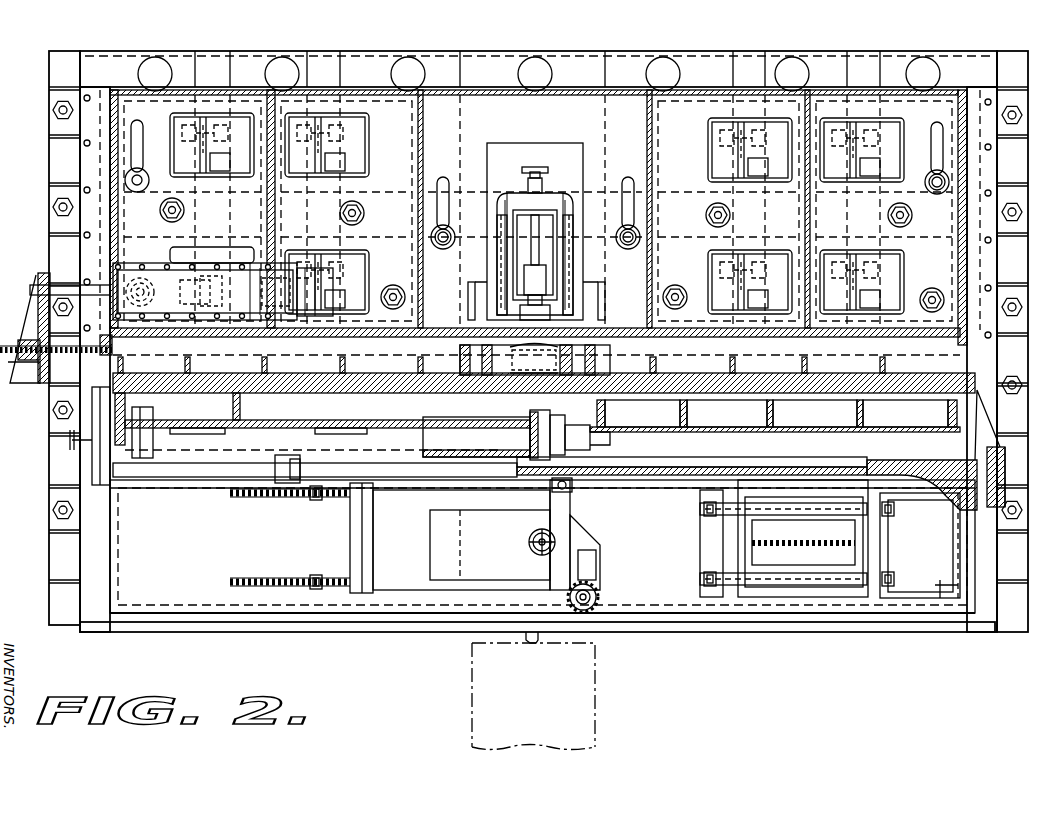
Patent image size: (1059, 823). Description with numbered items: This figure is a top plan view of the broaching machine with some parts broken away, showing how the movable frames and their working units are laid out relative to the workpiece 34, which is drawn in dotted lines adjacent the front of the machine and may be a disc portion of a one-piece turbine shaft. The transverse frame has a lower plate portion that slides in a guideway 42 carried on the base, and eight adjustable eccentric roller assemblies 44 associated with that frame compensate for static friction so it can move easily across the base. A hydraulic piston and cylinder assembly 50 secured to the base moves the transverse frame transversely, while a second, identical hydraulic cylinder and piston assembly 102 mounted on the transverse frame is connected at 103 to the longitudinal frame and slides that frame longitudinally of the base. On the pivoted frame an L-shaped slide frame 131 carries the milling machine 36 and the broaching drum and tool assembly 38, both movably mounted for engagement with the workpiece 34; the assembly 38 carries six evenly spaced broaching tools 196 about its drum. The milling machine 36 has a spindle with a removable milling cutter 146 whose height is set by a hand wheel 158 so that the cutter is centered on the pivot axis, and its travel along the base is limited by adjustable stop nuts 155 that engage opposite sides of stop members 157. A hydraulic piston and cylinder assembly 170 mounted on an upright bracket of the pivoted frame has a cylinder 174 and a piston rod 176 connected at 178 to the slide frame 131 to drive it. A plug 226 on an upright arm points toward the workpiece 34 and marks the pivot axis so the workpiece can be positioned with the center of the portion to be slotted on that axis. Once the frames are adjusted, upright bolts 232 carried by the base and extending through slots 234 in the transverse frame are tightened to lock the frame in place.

The workpiece 34 is at (600, 714).
The milling machine 36 is at (433, 570).
The broaching drum and tool assembly 38 is at (851, 567).
The guideway 42 is at (462, 140).
The adjustable eccentric roller assemblies 44 is at (238, 163).
The hydraulic piston and cylinder assembly 50 is at (564, 185).
The hydraulic cylinder and piston assembly 102 is at (153, 237).
The connection 103 is at (35, 273).
The L-shaped frame 131 is at (649, 459).
The milling cutter 146 is at (596, 596).
The adjustable stop nuts 155 is at (316, 500).
The stop members 157 is at (320, 580).
The hand wheel 158 is at (532, 541).
The hydraulic piston and cylinder assembly 170 is at (487, 427).
The cylinder 174 is at (430, 413).
The piston rod 176 is at (540, 436).
The connection 178 is at (965, 442).
The broaching tools 196 is at (770, 560).
The plug 226 is at (530, 645).
The upright bolts 232 is at (450, 232).
The slots 234 is at (447, 177).